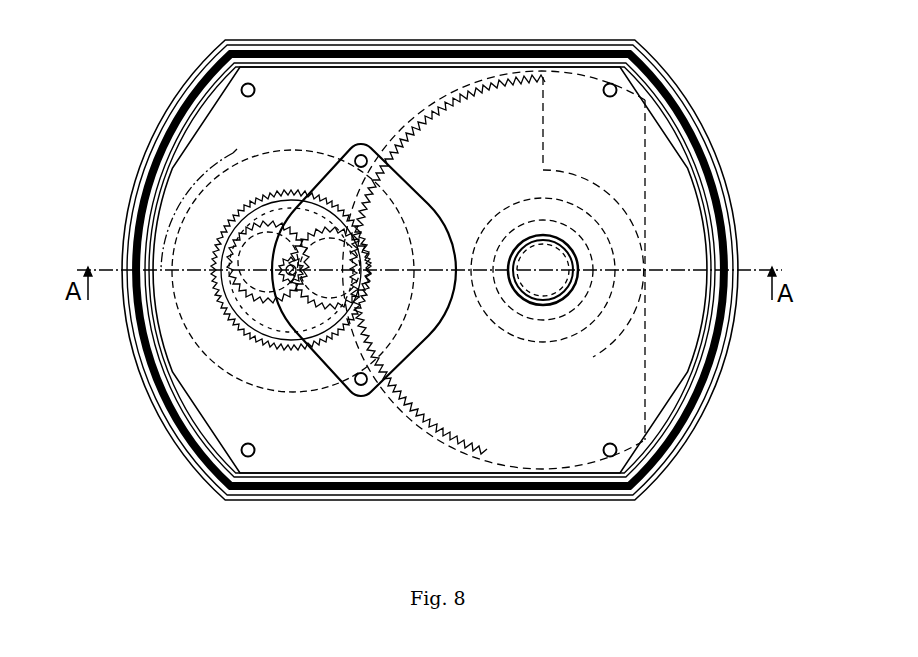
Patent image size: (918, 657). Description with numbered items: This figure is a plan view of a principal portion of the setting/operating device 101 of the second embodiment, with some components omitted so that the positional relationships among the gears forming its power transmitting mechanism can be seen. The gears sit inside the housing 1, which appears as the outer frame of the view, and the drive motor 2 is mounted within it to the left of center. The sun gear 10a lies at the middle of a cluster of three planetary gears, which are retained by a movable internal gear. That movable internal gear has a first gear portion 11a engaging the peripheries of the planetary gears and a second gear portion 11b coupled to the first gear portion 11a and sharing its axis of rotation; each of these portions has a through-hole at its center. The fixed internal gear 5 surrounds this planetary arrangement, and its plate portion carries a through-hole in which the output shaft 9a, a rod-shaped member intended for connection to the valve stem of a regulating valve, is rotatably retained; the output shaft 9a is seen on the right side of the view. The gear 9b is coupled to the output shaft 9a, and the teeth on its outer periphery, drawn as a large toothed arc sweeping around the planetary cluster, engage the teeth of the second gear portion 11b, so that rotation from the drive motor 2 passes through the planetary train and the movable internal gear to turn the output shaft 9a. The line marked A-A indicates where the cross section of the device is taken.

The housing 1 is at (213, 53).
The setting/operating device 101 is at (765, 42).
The drive motor 2 is at (349, 180).
The fixed internal gear 5 is at (220, 242).
The output shaft 9a is at (553, 262).
The gear 9b is at (497, 80).
The sun gear 10a is at (263, 272).
The first gear portion 11a is at (217, 250).
The second gear portion 11b is at (311, 330).